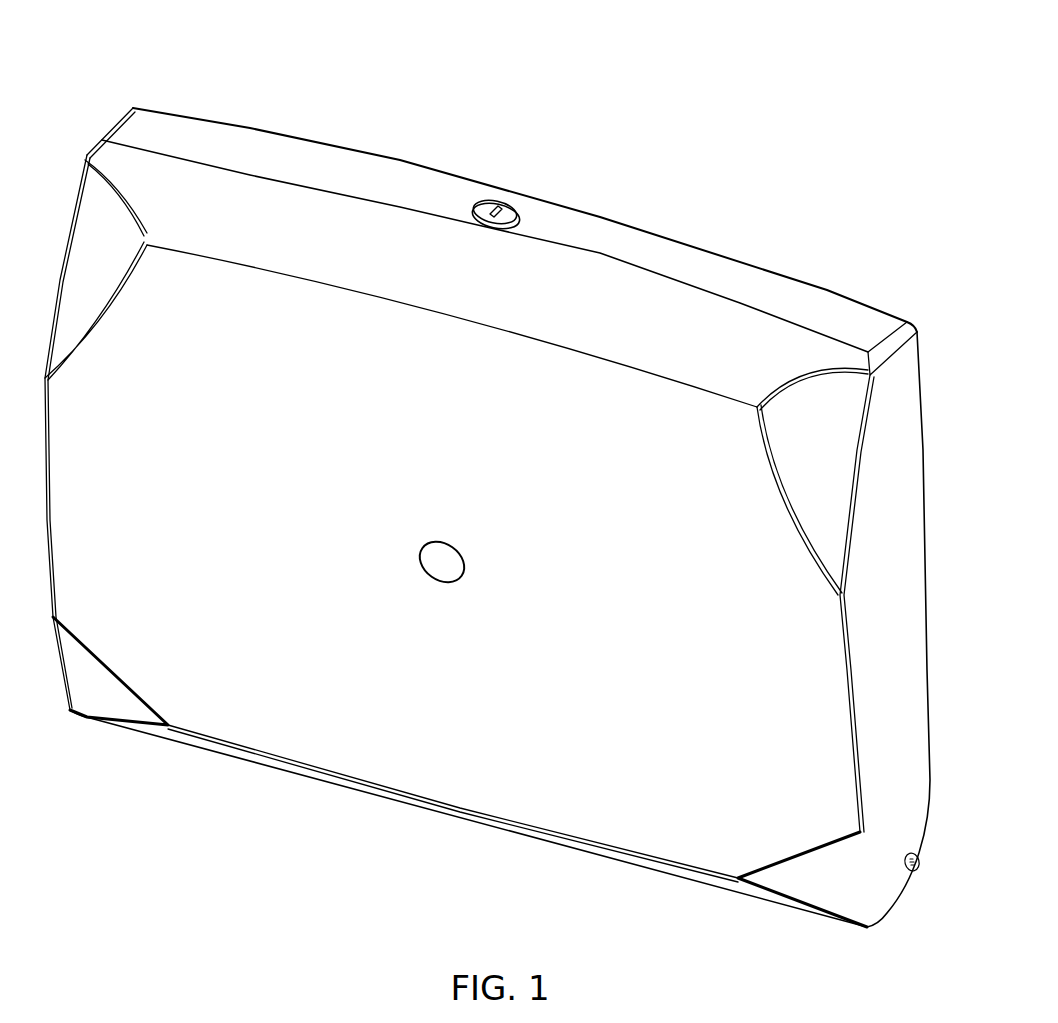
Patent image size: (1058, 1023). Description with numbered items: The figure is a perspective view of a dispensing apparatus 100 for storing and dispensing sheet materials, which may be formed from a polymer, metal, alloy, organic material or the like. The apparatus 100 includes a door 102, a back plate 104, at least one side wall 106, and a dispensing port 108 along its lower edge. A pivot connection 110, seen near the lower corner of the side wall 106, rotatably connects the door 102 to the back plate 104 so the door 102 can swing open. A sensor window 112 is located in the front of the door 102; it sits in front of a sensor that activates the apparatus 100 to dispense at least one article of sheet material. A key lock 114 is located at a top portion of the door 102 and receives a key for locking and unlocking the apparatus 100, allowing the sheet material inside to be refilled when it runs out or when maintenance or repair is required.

The dispensing apparatus 100 is at (690, 120).
The door 102 is at (132, 177).
The back plate 104 is at (817, 277).
The side wall 106 is at (905, 547).
The dispensing port 108 is at (290, 790).
The pivot connection 110 is at (914, 873).
The sensor window 112 is at (442, 560).
The key lock 114 is at (488, 198).